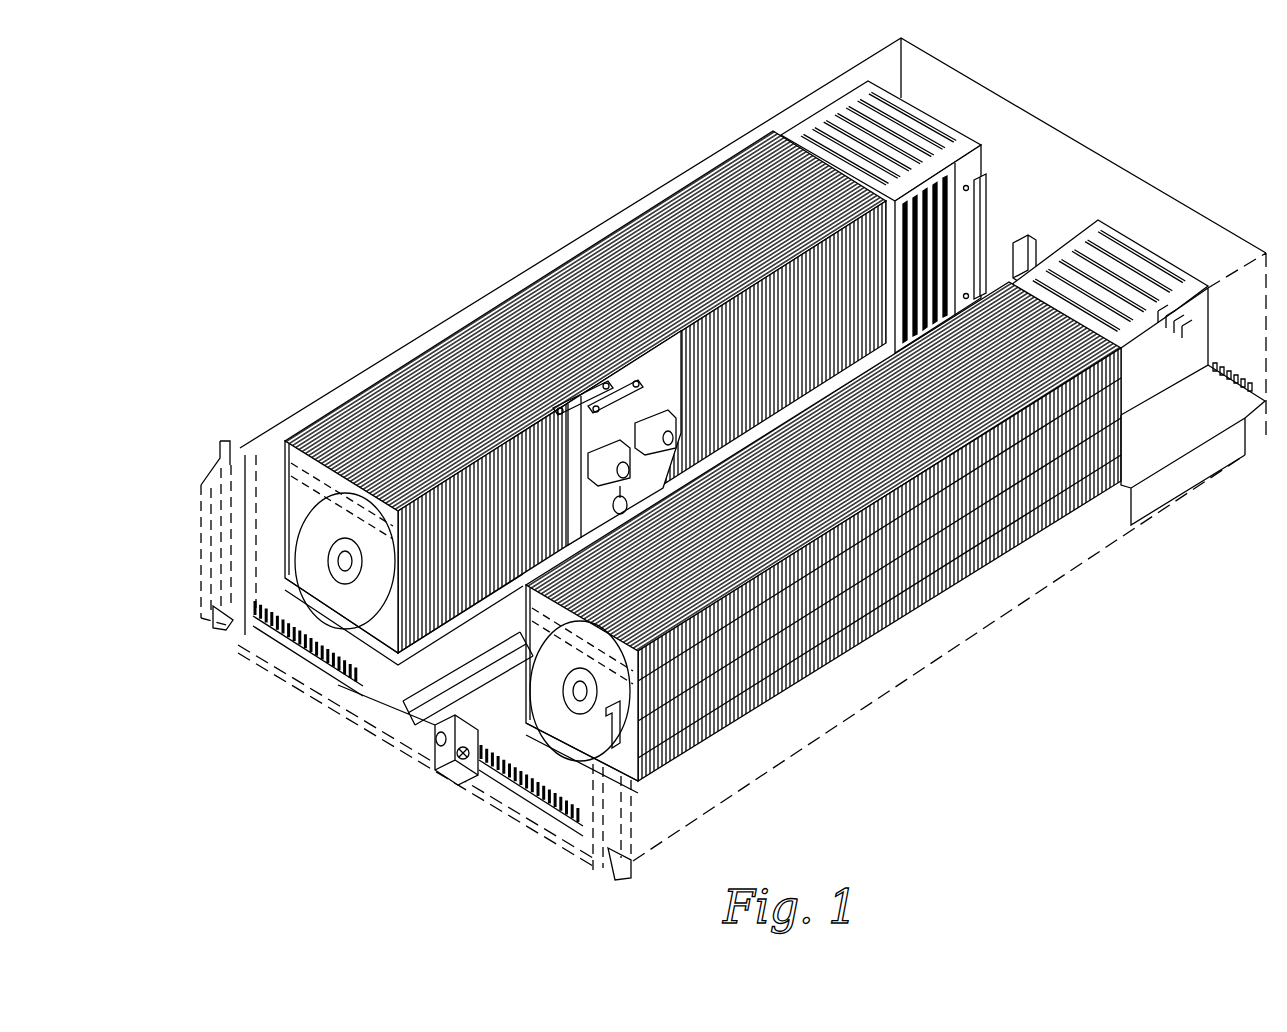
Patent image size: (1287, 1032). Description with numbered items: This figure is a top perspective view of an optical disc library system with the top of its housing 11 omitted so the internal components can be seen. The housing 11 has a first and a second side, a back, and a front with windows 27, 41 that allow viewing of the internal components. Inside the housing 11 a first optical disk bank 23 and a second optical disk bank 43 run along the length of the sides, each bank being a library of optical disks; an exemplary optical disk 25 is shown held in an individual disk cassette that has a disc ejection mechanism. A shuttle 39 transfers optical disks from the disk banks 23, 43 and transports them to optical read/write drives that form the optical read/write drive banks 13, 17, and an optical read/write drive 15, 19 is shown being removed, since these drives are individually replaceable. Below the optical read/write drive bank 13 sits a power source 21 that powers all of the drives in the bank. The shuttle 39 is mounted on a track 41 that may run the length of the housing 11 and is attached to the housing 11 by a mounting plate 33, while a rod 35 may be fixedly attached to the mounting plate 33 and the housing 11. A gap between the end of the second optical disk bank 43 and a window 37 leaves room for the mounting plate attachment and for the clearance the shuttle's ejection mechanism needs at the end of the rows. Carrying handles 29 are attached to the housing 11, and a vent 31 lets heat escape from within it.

The housing 11 is at (790, 722).
The optical read/write drive bank 13 is at (1090, 212).
The optical read/write drive 15 is at (1018, 237).
The optical read/write drive bank 17 is at (958, 137).
The optical read/write drive 19 is at (968, 176).
The power source 21 is at (895, 537).
The first optical disk bank 23 is at (561, 398).
The optical disk 25 is at (300, 490).
The window 27 is at (262, 480).
The carrying handles 29 is at (200, 612).
The vent 31 is at (262, 612).
The mounting plate 33 is at (432, 738).
The rod 35 is at (455, 752).
The window 37 is at (580, 737).
The shuttle 39 is at (650, 474).
The track 41 is at (490, 695).
The second optical disk bank 43 is at (895, 480).